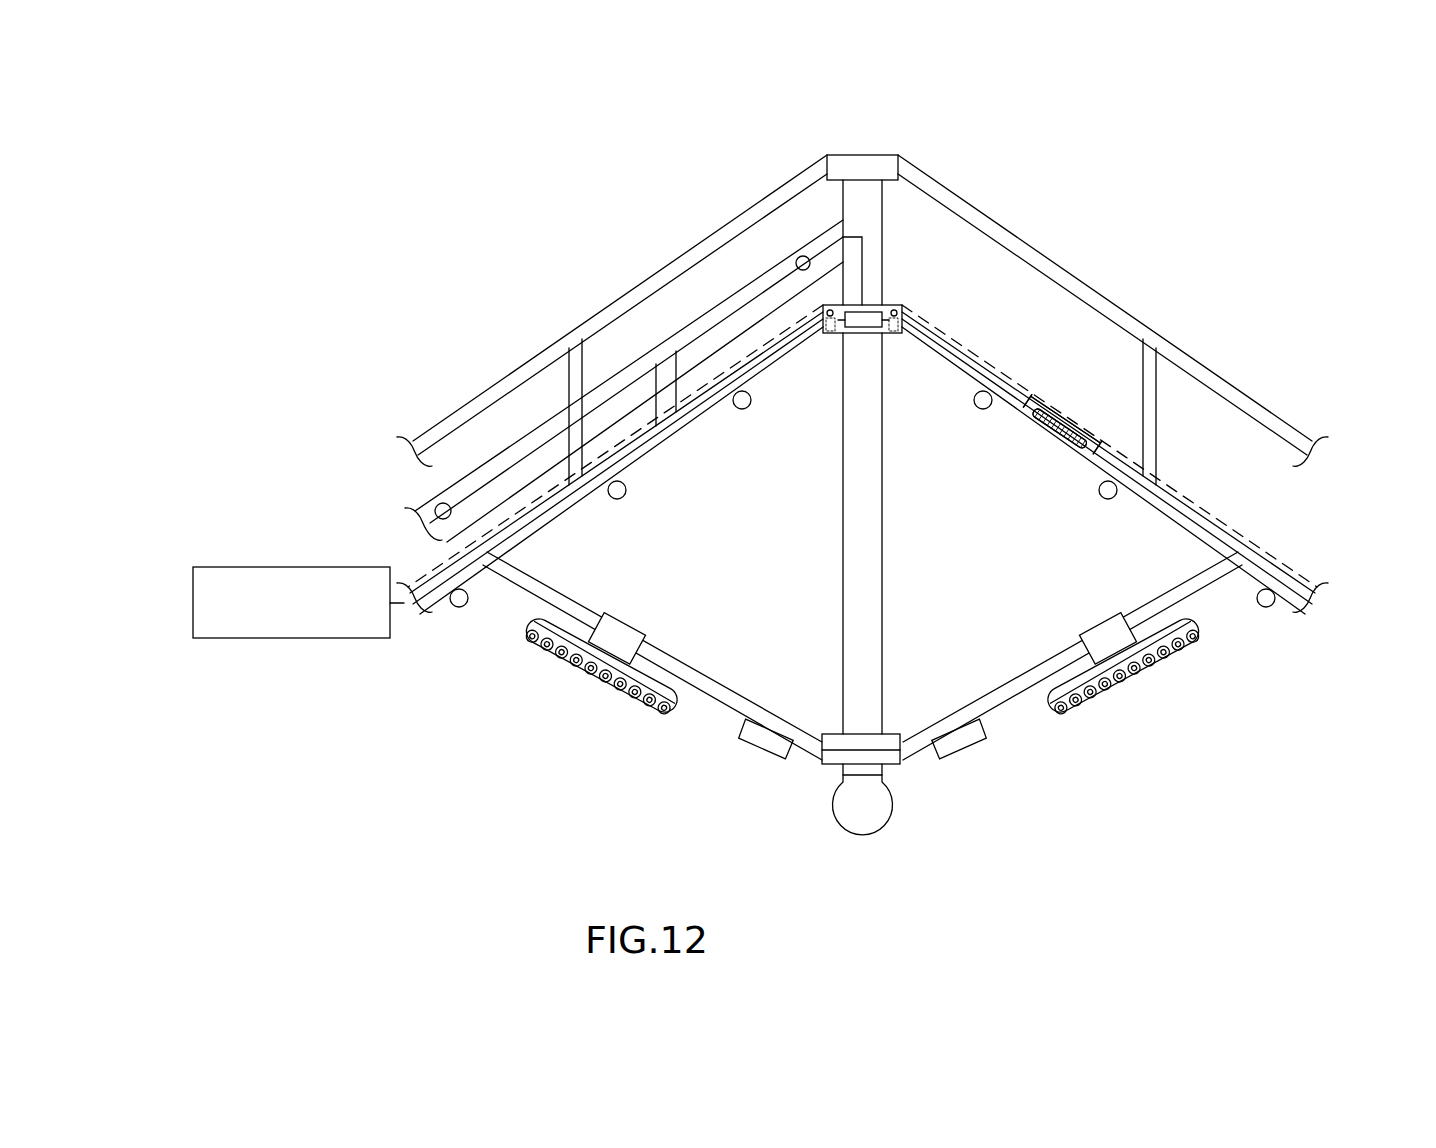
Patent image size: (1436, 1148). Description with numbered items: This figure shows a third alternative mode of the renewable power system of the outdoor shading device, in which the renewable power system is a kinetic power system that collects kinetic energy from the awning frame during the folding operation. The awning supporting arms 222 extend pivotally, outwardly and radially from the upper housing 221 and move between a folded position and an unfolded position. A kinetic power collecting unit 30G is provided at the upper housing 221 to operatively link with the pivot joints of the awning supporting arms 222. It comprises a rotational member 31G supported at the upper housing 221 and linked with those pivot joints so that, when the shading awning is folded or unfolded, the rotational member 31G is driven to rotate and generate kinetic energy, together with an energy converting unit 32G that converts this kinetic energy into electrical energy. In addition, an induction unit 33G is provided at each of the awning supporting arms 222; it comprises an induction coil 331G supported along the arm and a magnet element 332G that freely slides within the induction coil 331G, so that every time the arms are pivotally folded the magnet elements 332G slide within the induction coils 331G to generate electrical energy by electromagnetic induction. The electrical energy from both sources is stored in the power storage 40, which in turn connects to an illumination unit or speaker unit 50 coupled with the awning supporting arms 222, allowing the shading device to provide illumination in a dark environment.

The kinetic power collecting unit 30G is at (1048, 160).
The rotational member 31G is at (823, 303).
The energy converting unit 32G is at (862, 316).
The induction unit 33G is at (1238, 287).
The induction coil 331G is at (1080, 425).
The magnet element 332G is at (1052, 417).
The upper housing 221 is at (857, 330).
The awning supporting arms 222 is at (548, 507).
The illumination unit or speaker unit 50 is at (572, 707).
The power storage 40 is at (298, 602).